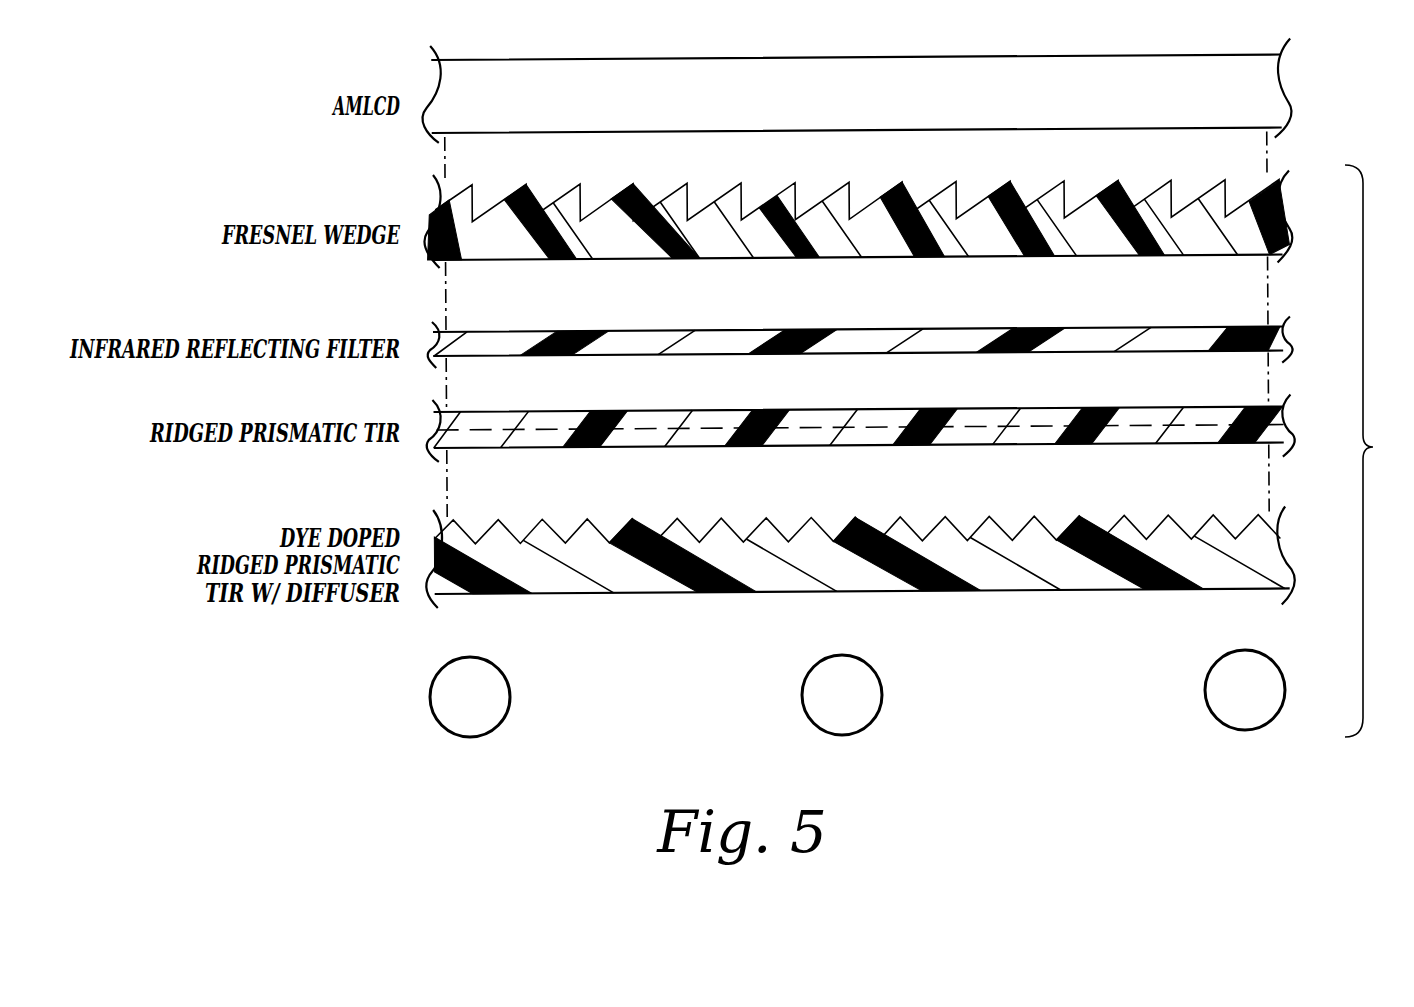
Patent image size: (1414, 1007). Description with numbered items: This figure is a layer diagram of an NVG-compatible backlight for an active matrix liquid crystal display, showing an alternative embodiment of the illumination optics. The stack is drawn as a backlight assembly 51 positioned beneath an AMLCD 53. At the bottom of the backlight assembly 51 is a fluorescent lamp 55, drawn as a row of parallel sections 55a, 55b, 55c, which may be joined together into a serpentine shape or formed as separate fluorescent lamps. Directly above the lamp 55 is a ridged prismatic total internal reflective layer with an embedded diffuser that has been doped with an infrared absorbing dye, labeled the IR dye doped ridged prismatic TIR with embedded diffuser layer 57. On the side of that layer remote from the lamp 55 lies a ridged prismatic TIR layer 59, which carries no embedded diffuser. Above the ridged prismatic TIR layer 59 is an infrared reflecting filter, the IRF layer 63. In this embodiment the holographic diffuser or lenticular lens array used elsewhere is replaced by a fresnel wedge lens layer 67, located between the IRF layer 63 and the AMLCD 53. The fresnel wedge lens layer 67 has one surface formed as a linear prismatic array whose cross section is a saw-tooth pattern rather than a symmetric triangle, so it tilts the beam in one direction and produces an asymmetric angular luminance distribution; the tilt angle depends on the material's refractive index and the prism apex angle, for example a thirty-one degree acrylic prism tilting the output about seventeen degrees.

The backlight assembly 51 is at (1379, 451).
The AMLCD 53 is at (1287, 93).
The fluorescent lamp 55 is at (892, 694).
The lamp section 55a is at (497, 727).
The lamp section 55b is at (868, 725).
The lamp section 55c is at (1265, 725).
The IR dye doped ridged prismatic TIR with embedded diffuser layer 57 is at (1278, 535).
The ridged prismatic TIR layer 59 is at (1280, 423).
The IRF layer 63 is at (1280, 342).
The fresnel wedge lens layer 67 is at (1285, 222).